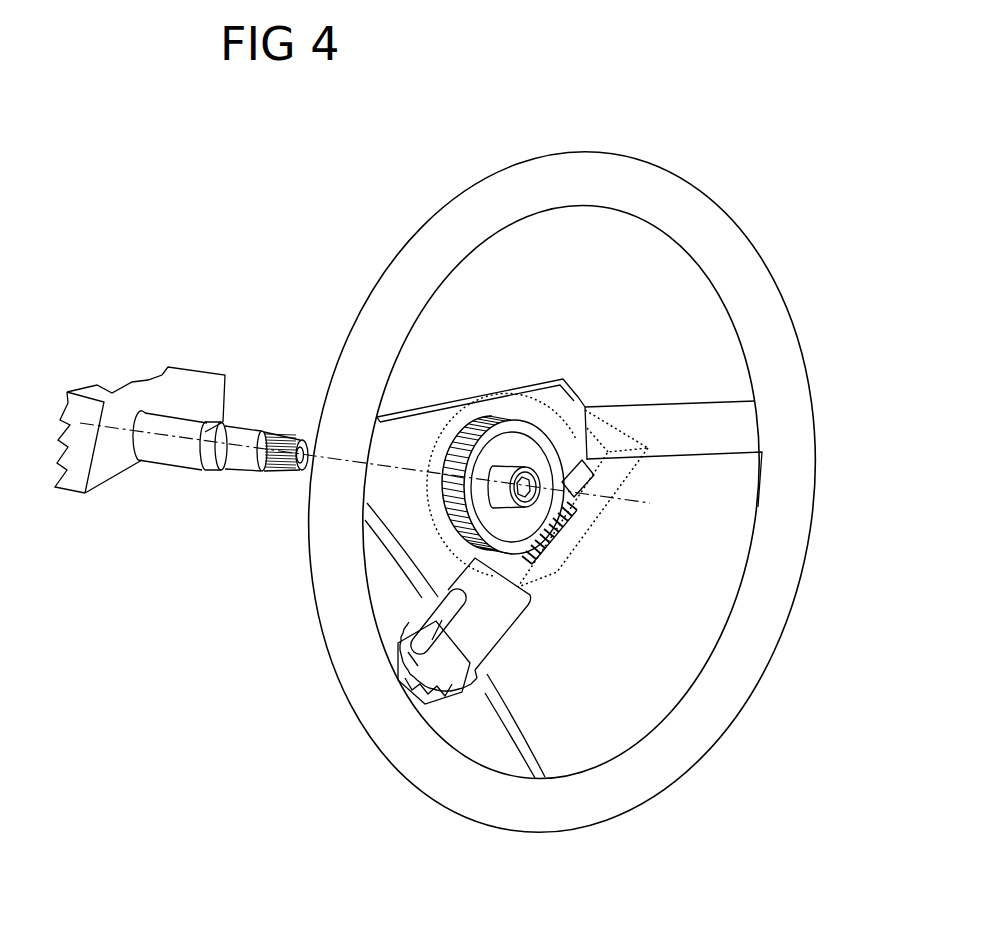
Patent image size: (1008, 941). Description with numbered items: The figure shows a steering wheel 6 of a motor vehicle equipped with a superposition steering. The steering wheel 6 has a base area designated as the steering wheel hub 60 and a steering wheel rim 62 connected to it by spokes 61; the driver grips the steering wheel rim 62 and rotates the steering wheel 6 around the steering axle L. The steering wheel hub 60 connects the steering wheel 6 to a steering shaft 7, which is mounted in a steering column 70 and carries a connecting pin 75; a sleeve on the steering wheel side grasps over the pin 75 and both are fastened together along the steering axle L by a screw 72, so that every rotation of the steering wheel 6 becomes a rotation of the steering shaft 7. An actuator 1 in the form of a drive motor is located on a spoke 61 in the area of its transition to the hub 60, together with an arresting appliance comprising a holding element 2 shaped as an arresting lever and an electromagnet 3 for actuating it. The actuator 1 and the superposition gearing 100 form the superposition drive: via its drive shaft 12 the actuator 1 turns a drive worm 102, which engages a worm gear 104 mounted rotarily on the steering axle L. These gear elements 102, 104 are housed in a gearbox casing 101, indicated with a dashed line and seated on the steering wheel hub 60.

The actuator 1 is at (502, 650).
The holding element 2 is at (413, 653).
The electromagnet 3 is at (442, 627).
The steering wheel 6 is at (798, 332).
The steering shaft 7 is at (246, 433).
The drive shaft 12 is at (577, 485).
The steering wheel hub 60 is at (407, 427).
The spokes 61 is at (693, 442).
The steering wheel rim 62 is at (790, 415).
The steering column 70 is at (115, 475).
The screw 72 is at (497, 502).
The connecting pin 75 is at (278, 472).
The superposition gearing 100 is at (533, 415).
The gearbox casing 101 is at (627, 430).
The drive worm 102 is at (532, 547).
The worm gear 104 is at (530, 453).
The steering axle L is at (537, 477).